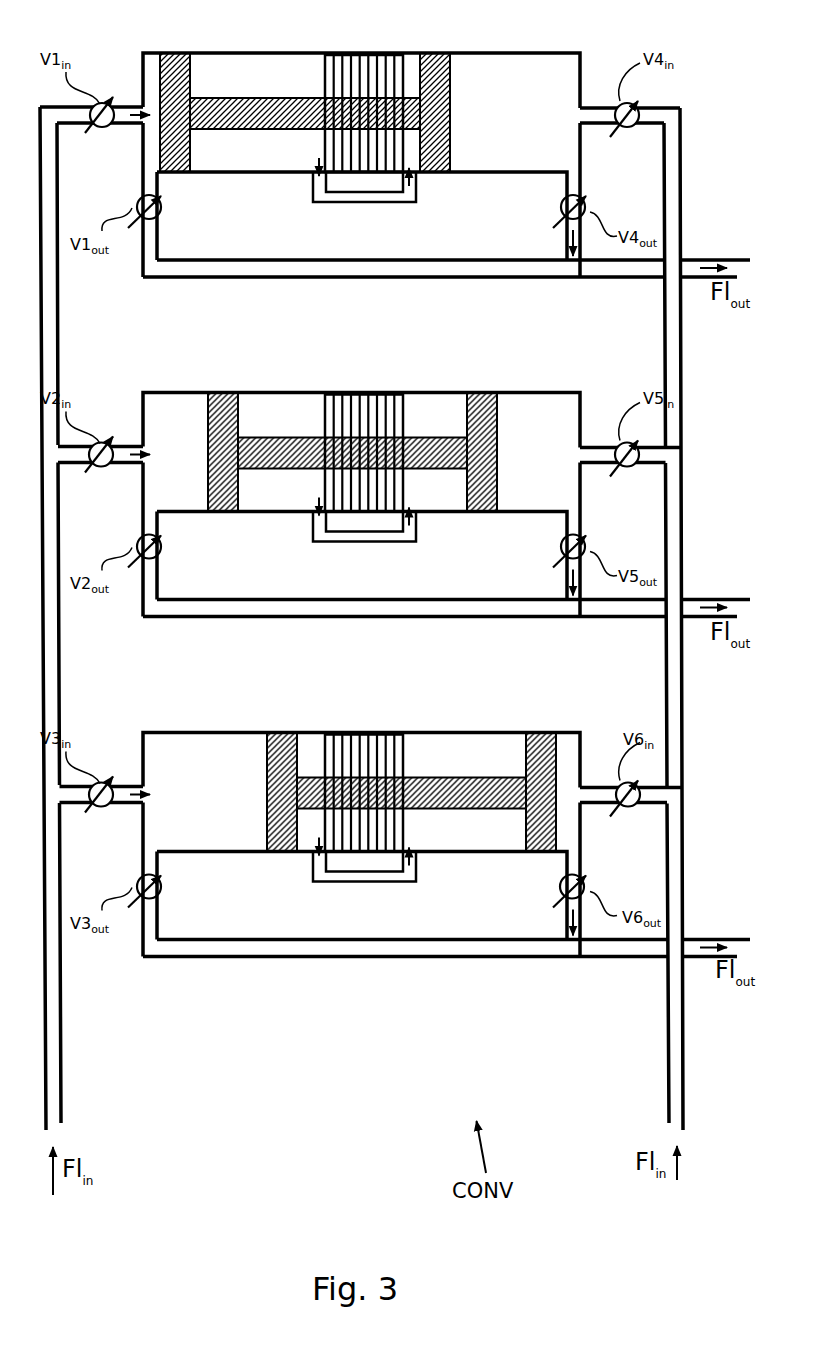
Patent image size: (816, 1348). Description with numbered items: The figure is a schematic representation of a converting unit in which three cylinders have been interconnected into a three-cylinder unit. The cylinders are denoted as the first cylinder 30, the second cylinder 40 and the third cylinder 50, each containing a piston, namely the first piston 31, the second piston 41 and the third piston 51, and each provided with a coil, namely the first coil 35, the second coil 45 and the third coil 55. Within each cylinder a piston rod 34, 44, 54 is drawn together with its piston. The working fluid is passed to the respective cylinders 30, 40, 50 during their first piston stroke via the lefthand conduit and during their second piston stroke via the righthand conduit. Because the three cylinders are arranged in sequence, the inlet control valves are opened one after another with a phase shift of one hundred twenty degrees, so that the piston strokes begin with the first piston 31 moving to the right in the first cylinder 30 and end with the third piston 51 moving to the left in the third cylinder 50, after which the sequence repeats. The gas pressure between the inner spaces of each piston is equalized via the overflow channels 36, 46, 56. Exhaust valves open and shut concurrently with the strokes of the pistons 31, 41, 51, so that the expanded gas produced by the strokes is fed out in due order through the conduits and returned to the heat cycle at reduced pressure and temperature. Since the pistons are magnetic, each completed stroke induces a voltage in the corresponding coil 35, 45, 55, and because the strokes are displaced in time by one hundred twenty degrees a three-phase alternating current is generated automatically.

The first cylinder 30 is at (250, 52).
The first piston 31 is at (203, 158).
The piston rod of first module 34 is at (305, 129).
The first coil 35 is at (323, 67).
The first overflow channel 36 is at (360, 203).
The second cylinder 40 is at (361, 482).
The second piston 41 is at (237, 472).
The piston rod of second module 44 is at (352, 495).
The second coil 45 is at (339, 432).
The second overflow channel 46 is at (364, 545).
The third cylinder 50 is at (361, 818).
The third piston 51 is at (263, 812).
The piston rod of third module 54 is at (395, 835).
The third coil 55 is at (338, 772).
The third overflow channel 56 is at (364, 885).